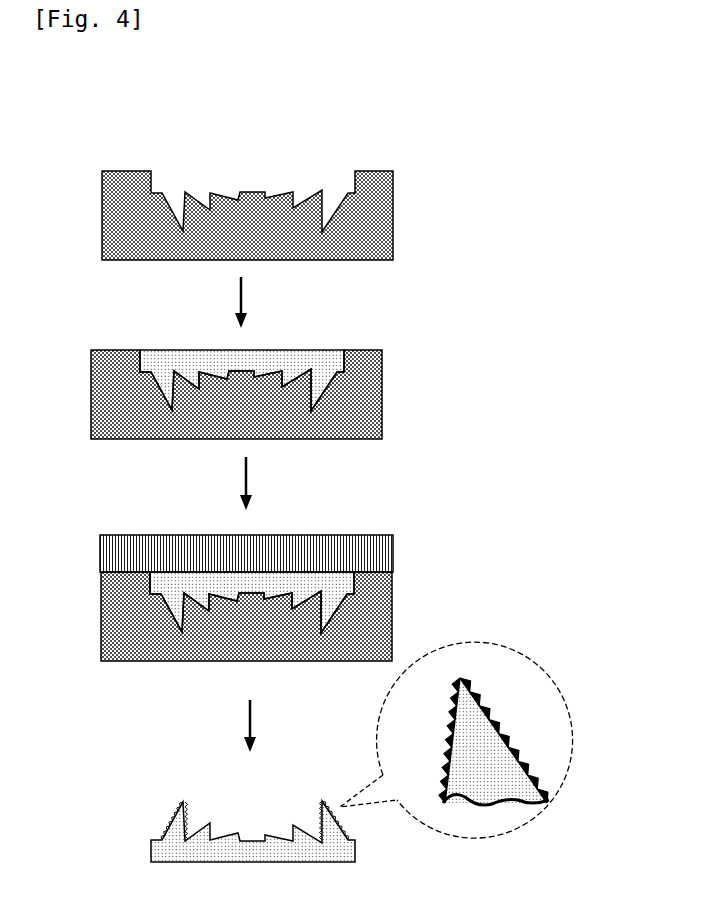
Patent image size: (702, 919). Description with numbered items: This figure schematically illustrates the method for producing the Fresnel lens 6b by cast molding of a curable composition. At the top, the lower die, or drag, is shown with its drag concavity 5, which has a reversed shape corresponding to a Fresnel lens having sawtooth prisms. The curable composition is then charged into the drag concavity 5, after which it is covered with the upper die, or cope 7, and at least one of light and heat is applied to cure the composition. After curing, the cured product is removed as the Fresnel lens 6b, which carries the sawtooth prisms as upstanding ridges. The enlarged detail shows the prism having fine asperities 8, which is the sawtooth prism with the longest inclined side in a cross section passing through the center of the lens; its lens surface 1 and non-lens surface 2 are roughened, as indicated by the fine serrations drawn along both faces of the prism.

The lens surface 1 is at (511, 697).
The non-lens surface 2 is at (474, 740).
The drag concavity 5 is at (270, 188).
The Fresnel lens 6b is at (293, 851).
The cope 7 is at (100, 553).
The prism having fine asperities 8 is at (456, 740).